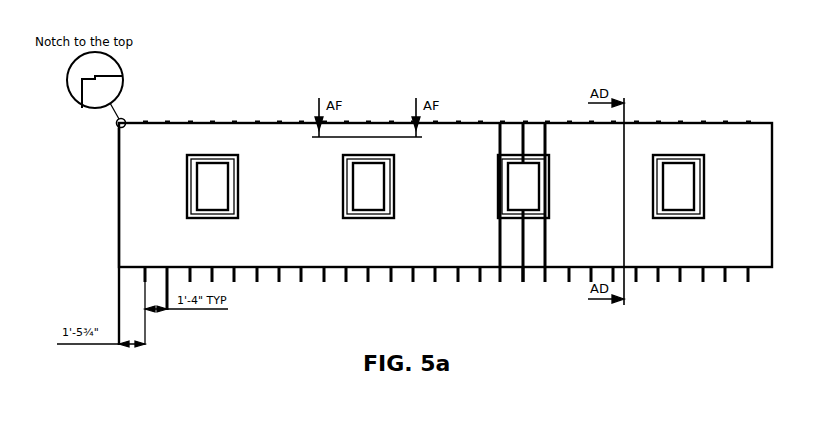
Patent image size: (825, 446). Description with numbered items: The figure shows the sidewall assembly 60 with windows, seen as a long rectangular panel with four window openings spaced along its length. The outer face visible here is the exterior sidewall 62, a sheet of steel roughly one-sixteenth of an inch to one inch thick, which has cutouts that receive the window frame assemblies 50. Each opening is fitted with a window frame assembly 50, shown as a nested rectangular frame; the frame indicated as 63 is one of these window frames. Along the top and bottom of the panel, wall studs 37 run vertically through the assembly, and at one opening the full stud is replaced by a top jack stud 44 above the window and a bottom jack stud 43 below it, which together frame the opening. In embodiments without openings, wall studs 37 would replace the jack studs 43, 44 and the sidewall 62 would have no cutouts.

The wall stud 37 is at (699, 123).
The window frame assembly 50 is at (220, 155).
The window frame 63 is at (359, 187).
The top jack stud 44 is at (522, 127).
The bottom jack stud 43 is at (523, 283).
The exterior sidewall 62 is at (128, 229).
The sidewall assembly 60 is at (705, 312).